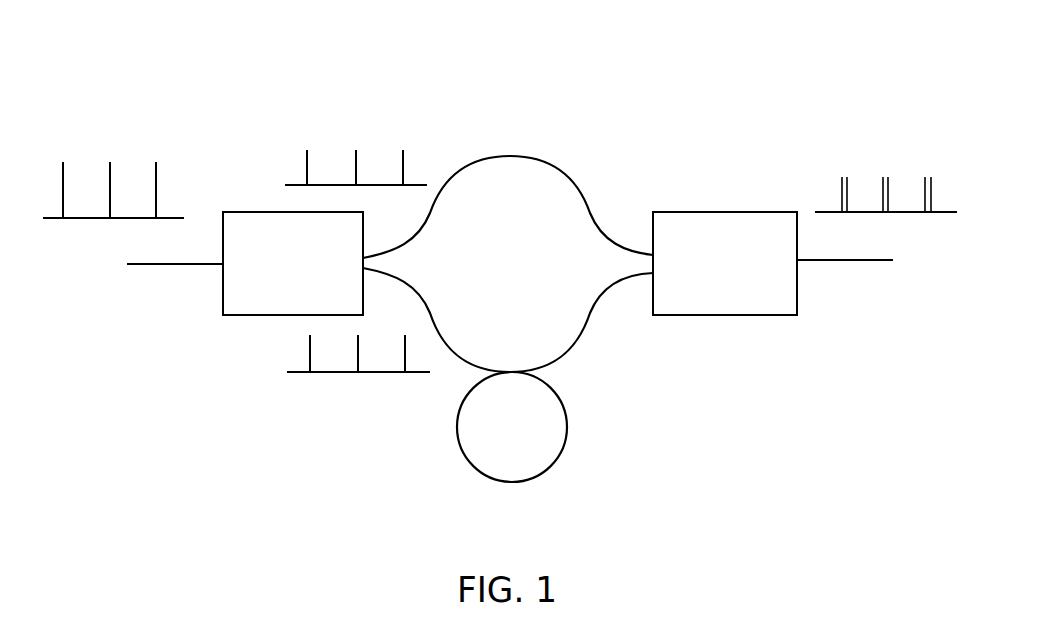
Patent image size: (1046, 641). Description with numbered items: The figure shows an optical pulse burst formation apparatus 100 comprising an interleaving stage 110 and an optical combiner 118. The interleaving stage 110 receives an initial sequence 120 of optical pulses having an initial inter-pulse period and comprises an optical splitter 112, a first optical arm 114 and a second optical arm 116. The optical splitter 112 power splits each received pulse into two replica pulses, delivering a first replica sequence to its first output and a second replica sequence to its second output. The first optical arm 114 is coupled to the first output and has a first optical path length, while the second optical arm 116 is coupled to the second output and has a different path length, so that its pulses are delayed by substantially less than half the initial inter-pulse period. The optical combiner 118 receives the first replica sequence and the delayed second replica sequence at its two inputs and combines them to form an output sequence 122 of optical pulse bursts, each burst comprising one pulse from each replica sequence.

The optical pulse burst formation apparatus 100 is at (170, 448).
The interleaving stage 110 is at (405, 90).
The optical splitter 112 is at (258, 295).
The first optical arm 114 is at (543, 137).
The second optical arm 116 is at (423, 398).
The optical combiner 118 is at (735, 297).
The initial sequence of optical pulses 120 is at (105, 133).
The output sequence of optical pulse bursts 122 is at (878, 120).